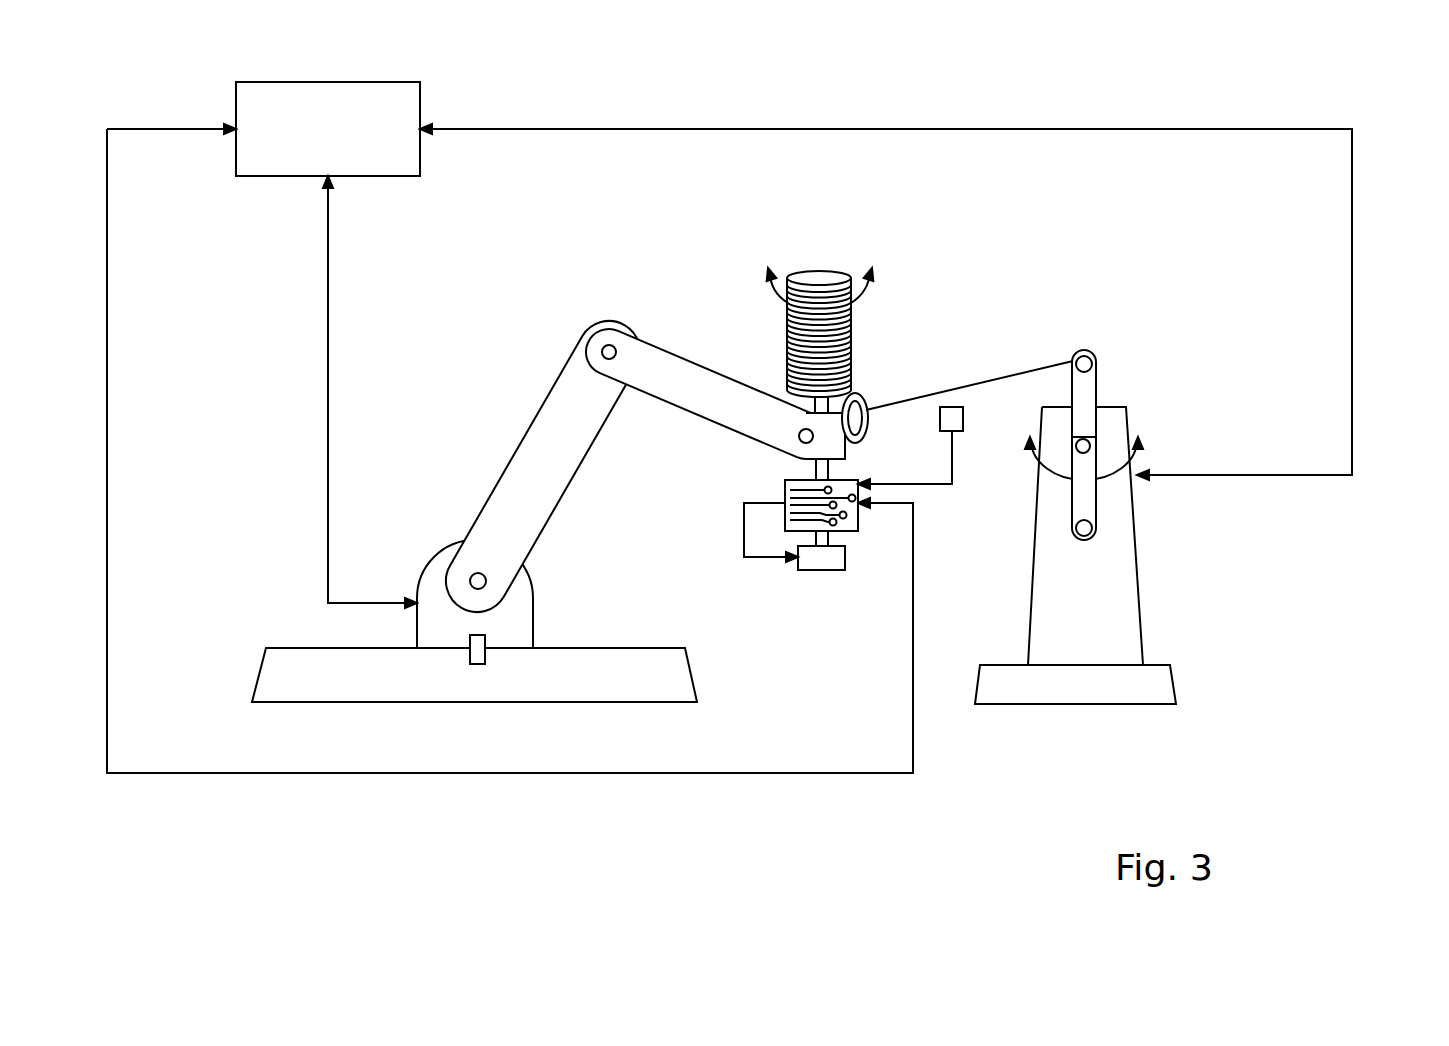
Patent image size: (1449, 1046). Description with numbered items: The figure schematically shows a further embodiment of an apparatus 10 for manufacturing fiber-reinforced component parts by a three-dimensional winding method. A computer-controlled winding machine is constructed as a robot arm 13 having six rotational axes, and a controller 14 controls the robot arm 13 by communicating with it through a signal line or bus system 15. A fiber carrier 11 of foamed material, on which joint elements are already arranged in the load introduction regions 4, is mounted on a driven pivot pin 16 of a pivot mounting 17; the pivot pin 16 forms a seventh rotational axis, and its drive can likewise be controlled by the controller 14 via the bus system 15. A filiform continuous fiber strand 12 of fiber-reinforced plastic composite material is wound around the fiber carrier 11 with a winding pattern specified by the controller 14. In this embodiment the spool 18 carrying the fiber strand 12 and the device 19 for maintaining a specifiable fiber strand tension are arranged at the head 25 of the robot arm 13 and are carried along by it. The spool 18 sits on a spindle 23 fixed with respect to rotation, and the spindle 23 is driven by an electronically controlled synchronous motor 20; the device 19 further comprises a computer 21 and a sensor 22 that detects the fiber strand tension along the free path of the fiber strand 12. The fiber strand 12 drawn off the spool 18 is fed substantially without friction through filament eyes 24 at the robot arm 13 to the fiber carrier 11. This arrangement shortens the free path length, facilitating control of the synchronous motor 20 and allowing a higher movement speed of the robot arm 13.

The load introduction regions 4 is at (1085, 350).
The apparatus 10 is at (1325, 570).
The fiber carrier 11 is at (1085, 395).
The fiber strand 12 is at (990, 372).
The robot arm 13 is at (563, 512).
The controller 14 is at (327, 124).
The bus system 15 is at (569, 128).
The pivot pin 16 is at (1090, 445).
The pivot mounting 17 is at (1113, 570).
The spool 18 is at (820, 282).
The device for maintaining fiber strand tension 19 is at (752, 325).
The synchronous motor 20 is at (820, 565).
The computer 21 is at (785, 520).
The sensor 22 is at (960, 432).
The spindle 23 is at (822, 462).
The filament eyes 24 is at (858, 400).
The head 25 is at (835, 445).